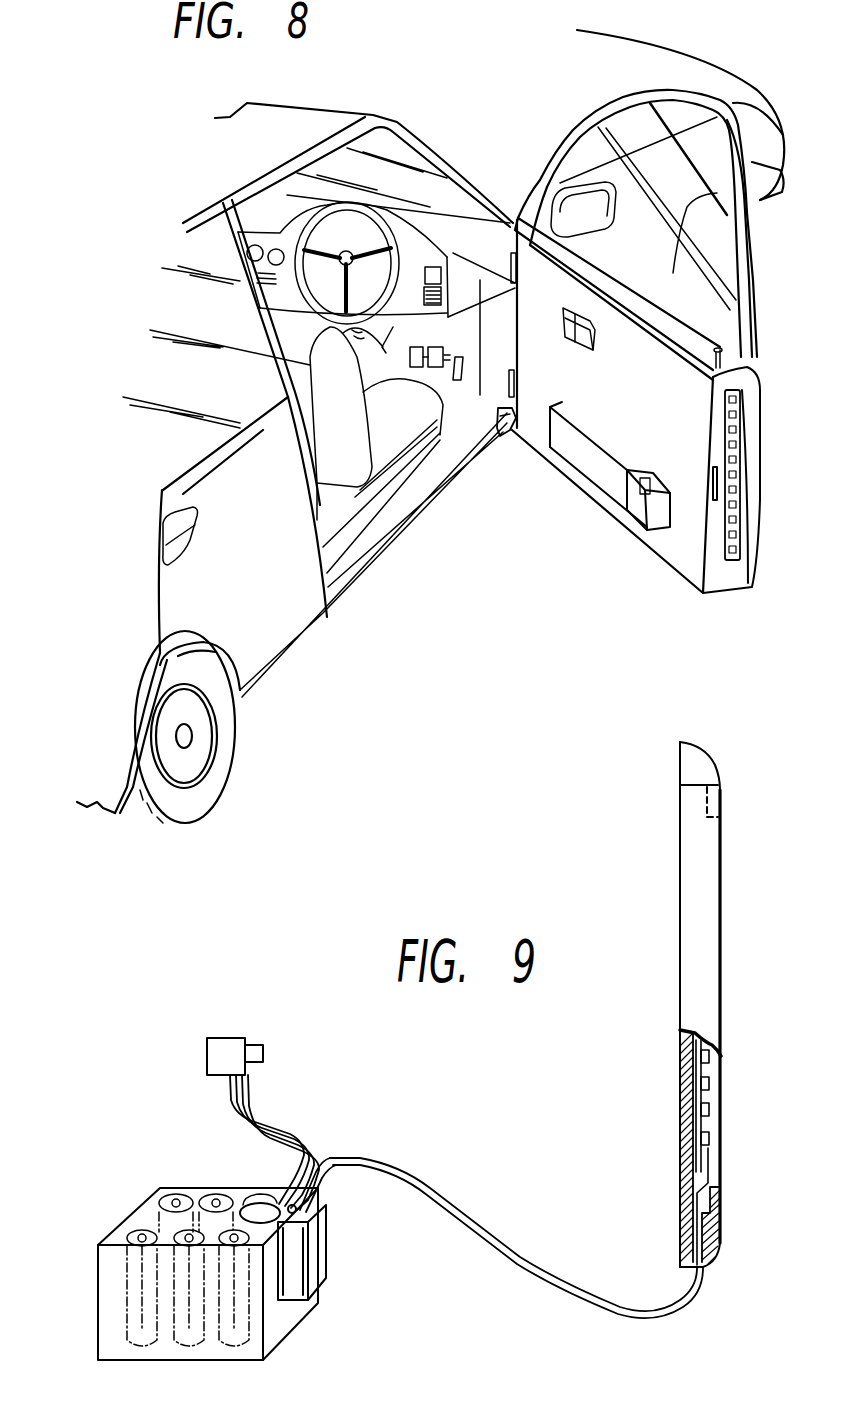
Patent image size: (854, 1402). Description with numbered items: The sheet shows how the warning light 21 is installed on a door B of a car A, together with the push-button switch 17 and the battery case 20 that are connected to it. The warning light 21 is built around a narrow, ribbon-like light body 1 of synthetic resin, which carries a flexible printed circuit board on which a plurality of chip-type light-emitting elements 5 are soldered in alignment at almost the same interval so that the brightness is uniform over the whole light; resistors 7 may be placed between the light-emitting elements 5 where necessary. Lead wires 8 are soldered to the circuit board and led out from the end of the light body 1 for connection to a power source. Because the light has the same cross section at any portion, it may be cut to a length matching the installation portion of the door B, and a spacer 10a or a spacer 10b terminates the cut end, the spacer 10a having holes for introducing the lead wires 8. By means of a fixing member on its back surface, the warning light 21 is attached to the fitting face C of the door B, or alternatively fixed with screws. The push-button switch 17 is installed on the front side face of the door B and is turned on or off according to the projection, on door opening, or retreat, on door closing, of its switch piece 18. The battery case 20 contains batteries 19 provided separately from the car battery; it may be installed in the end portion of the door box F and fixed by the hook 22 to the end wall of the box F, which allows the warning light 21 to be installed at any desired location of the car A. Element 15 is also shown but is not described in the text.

In FIG. 8, the car A is at (283, 118).
In FIG. 8, the door B is at (687, 317).
In FIG. 8, the fitting face C is at (757, 503).
In FIG. 8, the door box F is at (603, 480).
In FIG. 8, the push-button switch 17 is at (503, 432).
In FIG. 9, the push-button switch 17 is at (233, 1036).
In FIG. 8, the warning light 21 is at (745, 410).
In FIG. 9, the light body 1 is at (683, 1055).
In FIG. 9, the light-emitting elements 5 is at (709, 1056).
In FIG. 9, the resistors 7 is at (709, 1083).
In FIG. 9, the lead wires 8 is at (523, 1258).
In FIG. 9, the spacer 10a is at (721, 1245).
In FIG. 9, the spacer 10b is at (708, 763).
In FIG. 9, the switch element 15 is at (709, 1138).
In FIG. 9, the switch piece 18 is at (264, 1053).
In FIG. 9, the batteries 19 is at (183, 1293).
In FIG. 9, the battery case 20 is at (122, 1225).
In FIG. 9, the hook 22 is at (328, 1262).